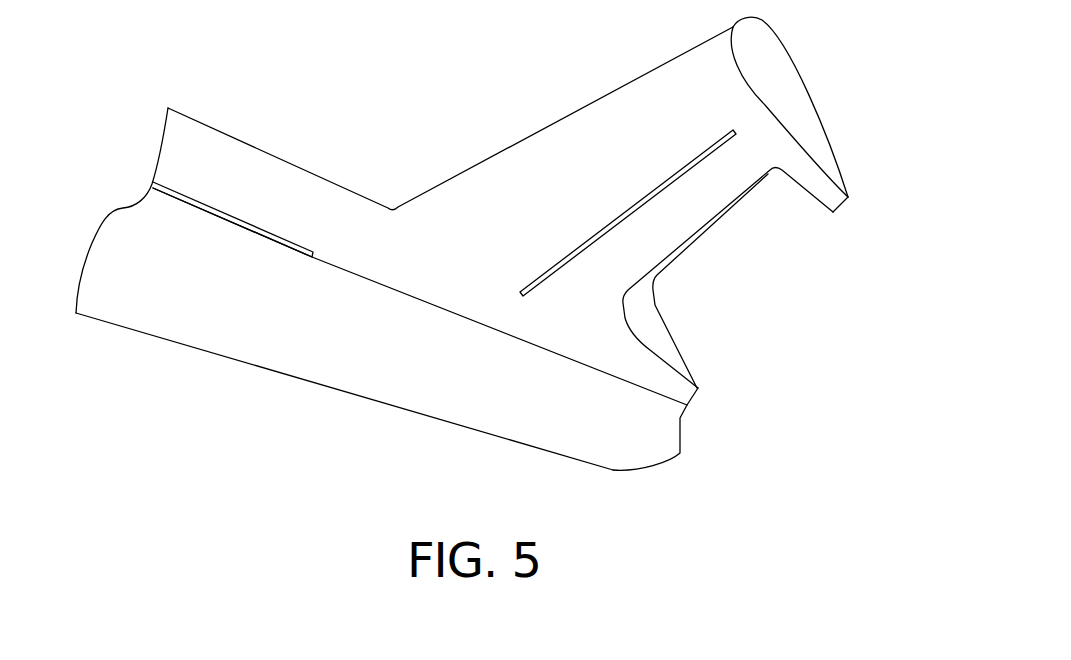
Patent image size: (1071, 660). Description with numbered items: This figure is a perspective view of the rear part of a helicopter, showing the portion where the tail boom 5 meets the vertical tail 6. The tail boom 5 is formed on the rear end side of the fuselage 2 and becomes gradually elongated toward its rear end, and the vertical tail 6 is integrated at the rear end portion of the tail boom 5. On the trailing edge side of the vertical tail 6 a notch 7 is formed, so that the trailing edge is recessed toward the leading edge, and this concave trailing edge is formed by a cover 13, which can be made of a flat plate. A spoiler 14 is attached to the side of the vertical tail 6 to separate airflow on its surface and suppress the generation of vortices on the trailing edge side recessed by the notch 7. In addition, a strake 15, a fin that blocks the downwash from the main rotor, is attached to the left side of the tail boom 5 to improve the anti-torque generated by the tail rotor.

The fuselage 2 is at (130, 336).
The tail boom 5 is at (315, 384).
The vertical tail 6 is at (617, 90).
The notch 7 is at (727, 252).
The cover 13 is at (655, 276).
The spoiler 14 is at (630, 208).
The strake 15 is at (233, 214).